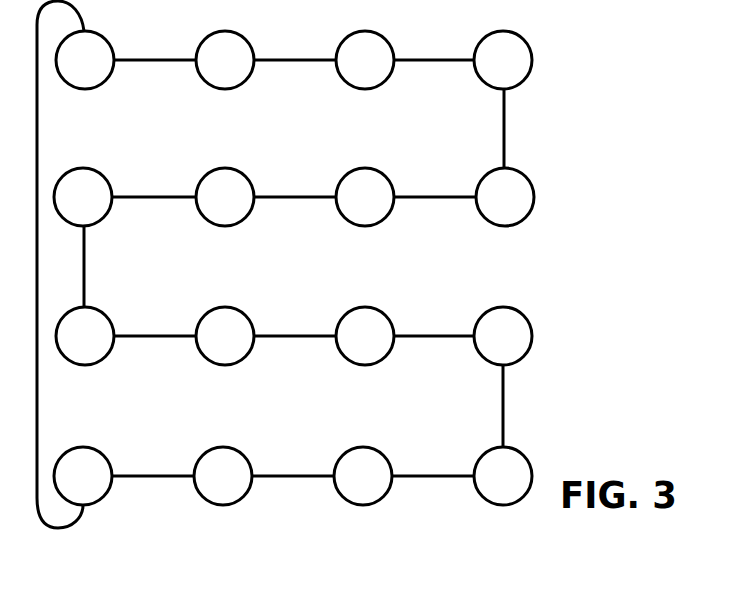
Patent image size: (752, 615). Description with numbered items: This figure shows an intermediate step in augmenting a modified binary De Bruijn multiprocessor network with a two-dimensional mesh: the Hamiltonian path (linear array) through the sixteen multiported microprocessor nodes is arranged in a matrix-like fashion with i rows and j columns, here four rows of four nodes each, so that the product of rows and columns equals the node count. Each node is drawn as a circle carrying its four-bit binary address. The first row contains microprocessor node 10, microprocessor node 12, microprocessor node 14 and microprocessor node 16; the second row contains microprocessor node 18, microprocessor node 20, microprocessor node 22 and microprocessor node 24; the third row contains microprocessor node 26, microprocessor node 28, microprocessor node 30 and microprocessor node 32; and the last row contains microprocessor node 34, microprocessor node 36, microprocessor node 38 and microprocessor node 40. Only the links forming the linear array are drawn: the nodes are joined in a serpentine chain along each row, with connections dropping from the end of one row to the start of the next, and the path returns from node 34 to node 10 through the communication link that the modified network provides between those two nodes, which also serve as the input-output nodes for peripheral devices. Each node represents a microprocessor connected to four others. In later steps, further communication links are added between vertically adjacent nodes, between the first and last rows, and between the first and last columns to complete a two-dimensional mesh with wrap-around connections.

The microprocessor node 10 is at (105, 81).
The microprocessor node 12 is at (245, 81).
The microprocessor node 14 is at (384, 82).
The microprocessor node 16 is at (523, 81).
The microprocessor node 18 is at (103, 218).
The microprocessor node 20 is at (245, 218).
The microprocessor node 22 is at (385, 218).
The microprocessor node 24 is at (525, 218).
The microprocessor node 26 is at (100, 362).
The microprocessor node 28 is at (243, 358).
The microprocessor node 30 is at (383, 358).
The microprocessor node 32 is at (528, 347).
The microprocessor node 34 is at (102, 451).
The microprocessor node 36 is at (240, 455).
The microprocessor node 38 is at (378, 452).
The microprocessor node 40 is at (519, 447).